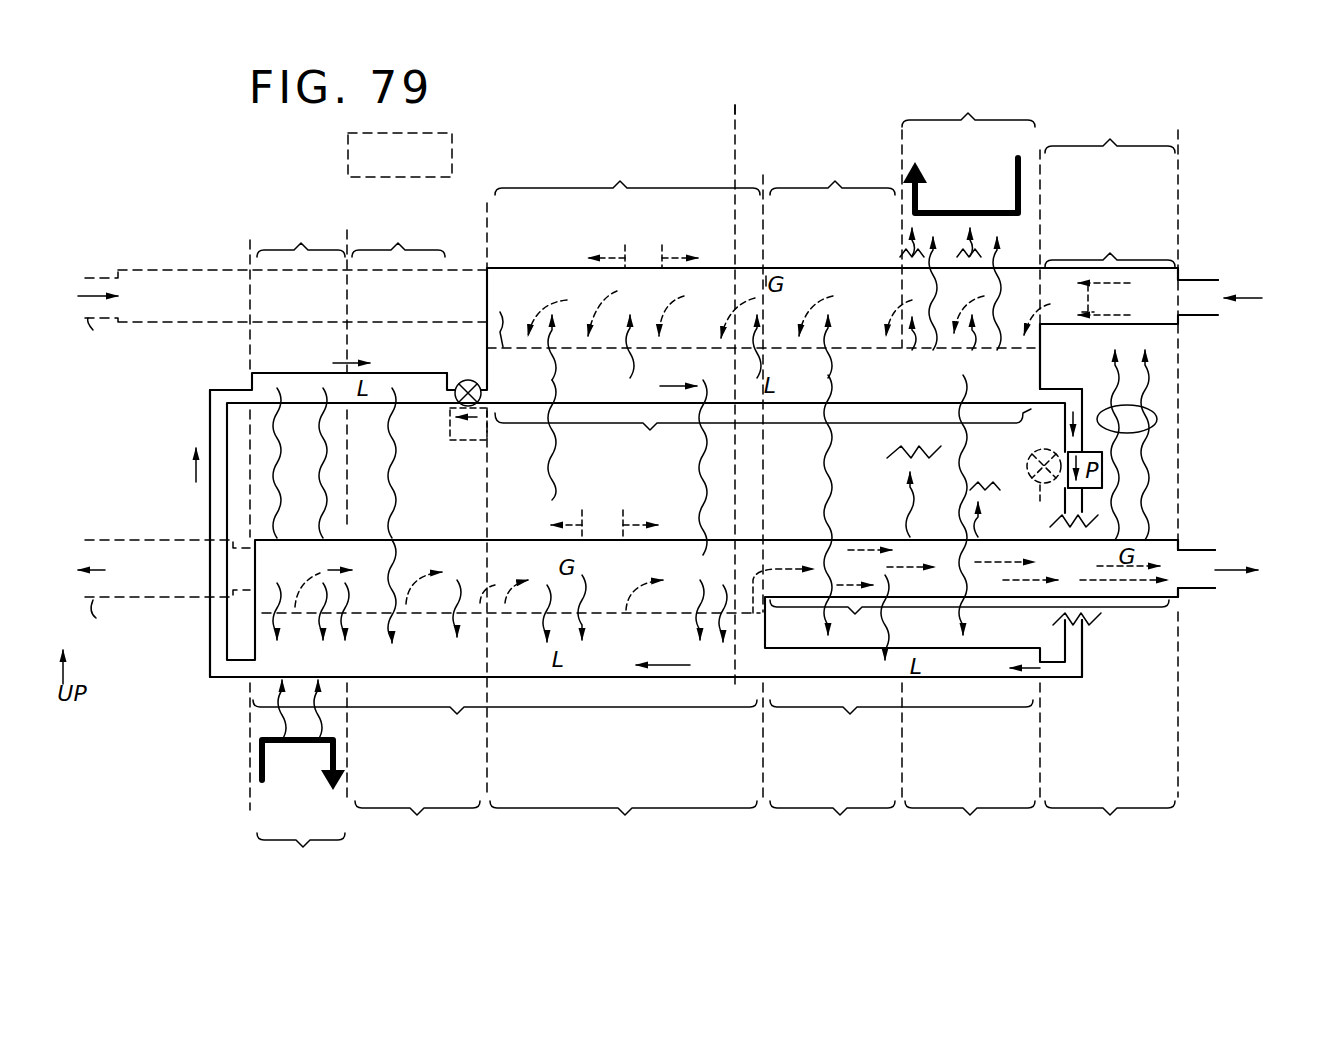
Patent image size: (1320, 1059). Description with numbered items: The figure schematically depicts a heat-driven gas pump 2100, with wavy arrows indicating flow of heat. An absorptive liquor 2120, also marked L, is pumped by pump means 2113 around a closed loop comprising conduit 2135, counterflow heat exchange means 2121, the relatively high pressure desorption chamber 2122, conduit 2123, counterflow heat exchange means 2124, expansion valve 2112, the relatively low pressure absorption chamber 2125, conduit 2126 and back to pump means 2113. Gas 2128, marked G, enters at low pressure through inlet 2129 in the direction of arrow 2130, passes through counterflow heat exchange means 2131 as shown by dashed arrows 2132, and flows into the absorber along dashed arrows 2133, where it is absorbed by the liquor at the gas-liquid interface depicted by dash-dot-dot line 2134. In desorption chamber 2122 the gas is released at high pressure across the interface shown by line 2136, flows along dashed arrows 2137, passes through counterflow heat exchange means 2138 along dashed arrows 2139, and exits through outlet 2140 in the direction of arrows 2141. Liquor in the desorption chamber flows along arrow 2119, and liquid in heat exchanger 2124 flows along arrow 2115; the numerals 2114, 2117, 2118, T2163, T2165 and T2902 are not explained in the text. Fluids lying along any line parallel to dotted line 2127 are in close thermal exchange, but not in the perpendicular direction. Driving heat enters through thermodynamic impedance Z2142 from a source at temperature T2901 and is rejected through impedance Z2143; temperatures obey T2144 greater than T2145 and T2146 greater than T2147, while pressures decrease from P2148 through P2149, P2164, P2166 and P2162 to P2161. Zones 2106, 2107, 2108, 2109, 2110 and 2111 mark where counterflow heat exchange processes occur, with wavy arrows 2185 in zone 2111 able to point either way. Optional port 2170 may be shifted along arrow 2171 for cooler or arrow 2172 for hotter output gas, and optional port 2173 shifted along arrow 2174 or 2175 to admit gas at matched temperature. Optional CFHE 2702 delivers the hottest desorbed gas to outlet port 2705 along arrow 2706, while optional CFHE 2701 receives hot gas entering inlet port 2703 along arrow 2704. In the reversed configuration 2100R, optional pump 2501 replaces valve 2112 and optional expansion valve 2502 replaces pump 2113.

The heat-driven gas pump 2100 is at (285, 180).
The reversed configuration 2100R is at (478, 163).
The zone 2106 is at (301, 547).
The zone 2107 is at (416, 529).
The zone 2108 is at (625, 495).
The zone 2109 is at (832, 498).
The zone 2110 is at (968, 464).
The zone 2111 is at (1110, 476).
The expansion valve 2112 is at (468, 376).
The pump means 2113 is at (1102, 474).
The upward direction arrow 2114 is at (165, 465).
The arrow 2115 is at (521, 362).
The partition 2117 is at (1020, 434).
The lower liquid passage 2118 is at (1008, 670).
The arrow 2119 is at (656, 653).
The absorptive liquor 2120 is at (578, 393).
The counterflow heat exchange means 2121 is at (901, 720).
The desorption chamber 2122 is at (505, 721).
The conduit 2123 is at (210, 652).
The counterflow heat exchange means 2124 is at (288, 372).
The absorption chamber 2125 is at (763, 431).
The conduit 2126 is at (1108, 403).
The dotted line 2127 is at (728, 99).
The gas 2128 is at (610, 567).
The inlet 2129 is at (1199, 280).
The arrow 2130 is at (1252, 303).
The counterflow heat exchange means 2131 is at (1110, 248).
The dashed arrows 2132 is at (1099, 299).
The dashed arrows 2133 is at (774, 327).
The dash-dot-dot line 2134 is at (529, 314).
The conduit 2135 is at (1065, 506).
The dash-dot-dot line 2136 is at (498, 586).
The dashed arrows 2137 is at (620, 517).
The counterflow heat exchange means 2138 is at (969, 619).
The dashed arrows 2139 is at (1002, 567).
The outlet 2140 is at (1198, 542).
The arrows 2141 is at (1242, 580).
The optional port 2170 is at (603, 513).
The arrow 2171 is at (653, 514).
The arrow 2172 is at (551, 514).
The optional port 2173 is at (648, 242).
The arrow 2174 is at (694, 245).
The arrow 2175 is at (595, 244).
The wavy arrows 2185 is at (1157, 421).
The optional pump 2501 is at (448, 438).
The optional expansion valve 2502 is at (1014, 475).
The optional counterflow heat exchanger 2701 is at (193, 262).
The optional counterflow heat exchanger 2702 is at (214, 511).
The optional inlet port 2703 is at (109, 340).
The arrow 2704 is at (139, 295).
The optional outlet port 2705 is at (109, 621).
The arrow 2706 is at (86, 559).
The pressure P2161 is at (508, 268).
The pressure P2162 is at (1013, 277).
The pressure P2164 is at (1267, 630).
The pressure P2166 is at (1240, 384).
The pressure P2148 is at (300, 559).
The pressure P2149 is at (750, 550).
The temperature T2144 is at (305, 584).
The temperature T2145 is at (789, 580).
The temperature T2146 is at (531, 309).
The temperature T2147 is at (1031, 309).
The temperature point 2163 T2163 is at (1264, 550).
The temperature point 2165 T2165 is at (1243, 364).
The temperature T2901 is at (296, 791).
The temperature point 2902 T2902 is at (998, 194).
The thermodynamic impedance Z2142 is at (303, 735).
The thermodynamic impedance Z2143 is at (960, 185).